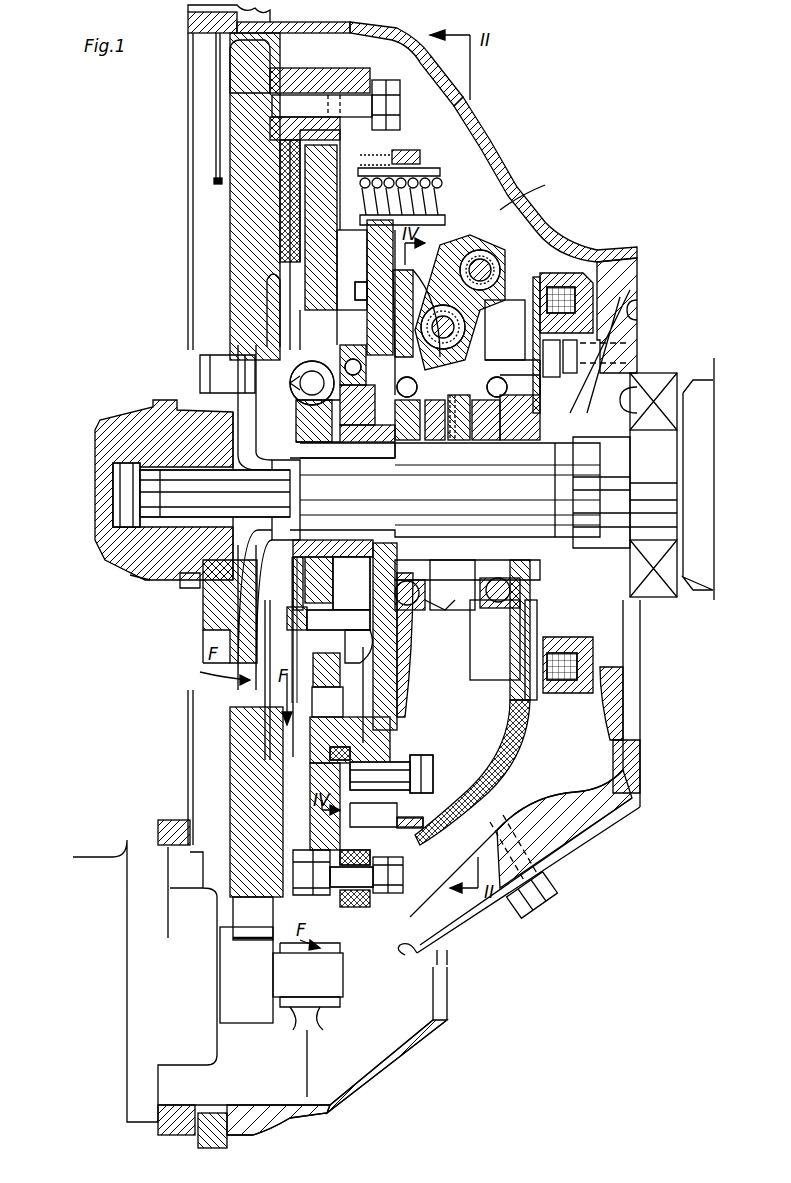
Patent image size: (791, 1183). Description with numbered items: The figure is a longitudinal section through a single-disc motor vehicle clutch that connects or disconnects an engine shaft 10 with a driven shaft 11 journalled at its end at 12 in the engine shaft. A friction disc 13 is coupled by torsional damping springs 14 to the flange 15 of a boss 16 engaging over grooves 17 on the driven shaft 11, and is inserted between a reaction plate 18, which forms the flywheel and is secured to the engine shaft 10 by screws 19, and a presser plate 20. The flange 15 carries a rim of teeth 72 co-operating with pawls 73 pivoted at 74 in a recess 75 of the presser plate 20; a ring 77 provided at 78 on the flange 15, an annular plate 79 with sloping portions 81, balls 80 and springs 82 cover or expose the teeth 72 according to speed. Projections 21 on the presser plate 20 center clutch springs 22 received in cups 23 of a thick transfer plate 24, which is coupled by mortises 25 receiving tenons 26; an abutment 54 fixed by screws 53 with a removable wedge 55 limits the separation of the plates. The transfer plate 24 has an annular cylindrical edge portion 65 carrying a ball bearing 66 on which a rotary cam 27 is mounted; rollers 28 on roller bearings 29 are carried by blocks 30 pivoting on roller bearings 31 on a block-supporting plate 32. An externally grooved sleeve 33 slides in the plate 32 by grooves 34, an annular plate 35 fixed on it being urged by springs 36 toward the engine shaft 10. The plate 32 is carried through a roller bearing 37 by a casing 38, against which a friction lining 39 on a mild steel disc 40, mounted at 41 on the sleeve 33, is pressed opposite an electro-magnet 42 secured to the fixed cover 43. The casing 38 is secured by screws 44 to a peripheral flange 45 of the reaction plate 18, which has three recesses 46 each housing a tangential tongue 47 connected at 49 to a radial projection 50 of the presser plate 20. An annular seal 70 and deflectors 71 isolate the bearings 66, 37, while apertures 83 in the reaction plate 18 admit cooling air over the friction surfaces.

The engine shaft 10 is at (140, 565).
The driven shaft 11 is at (470, 478).
The journal 12 is at (185, 585).
The friction disc 13 is at (280, 158).
The torsional damping springs 14 is at (300, 395).
The flange 15 is at (300, 350).
The boss 16 is at (300, 445).
The grooves 17 is at (320, 458).
The reaction plate 18 is at (240, 200).
The screws 19 is at (200, 372).
The presser plate 20 is at (430, 80).
The projections 21 is at (300, 238).
The clutch spring 22 is at (450, 150).
The cup 23 is at (440, 175).
The transfer plate 24 is at (355, 262).
The mortises 25 is at (397, 727).
The tenons 26 is at (413, 818).
The rotary cam 27 is at (430, 290).
The rollers 28 is at (428, 316).
The roller bearings 29 is at (443, 338).
The blocks 30 is at (470, 240).
The roller bearings 31 is at (498, 262).
The block-supporting plate 32 is at (480, 685).
The externally grooved sleeve 33 is at (440, 440).
The grooves 34 is at (515, 440).
The annular plate 35 is at (412, 438).
The springs 36 is at (462, 440).
The roller bearing 37 is at (488, 440).
The casing 38 is at (535, 188).
The annular friction lining 39 is at (565, 278).
The disc 40 is at (538, 392).
The mounting 41 is at (560, 455).
The electro-magnet 42 is at (580, 290).
The fixed cover 43 is at (575, 240).
The screws 44 is at (335, 105).
The peripheral flange 45 is at (305, 80).
The recesses 46 is at (265, 955).
The tangential tongue 47 is at (355, 907).
The pivot connection 49 is at (390, 893).
The radial projection 50 is at (325, 910).
The screws 53 is at (433, 770).
The abutment 54 is at (433, 780).
The removable wedge 55 is at (350, 752).
The annular cylindrical edge portion 65 is at (380, 452).
The ball bearing 66 is at (380, 395).
The annular seal 70 is at (415, 152).
The deflectors 71 is at (428, 603).
The teeth 72 is at (278, 306).
The pawls 73 is at (300, 660).
The pawl pivot 74 is at (330, 697).
The recess 75 is at (321, 227).
The ring 77 is at (357, 404).
The ring mounting 78 is at (355, 600).
The annular plate 79 is at (355, 287).
The balls 80 is at (380, 287).
The sloping portions 81 is at (353, 356).
The springs 82 is at (356, 646).
The apertures 83 is at (240, 700).